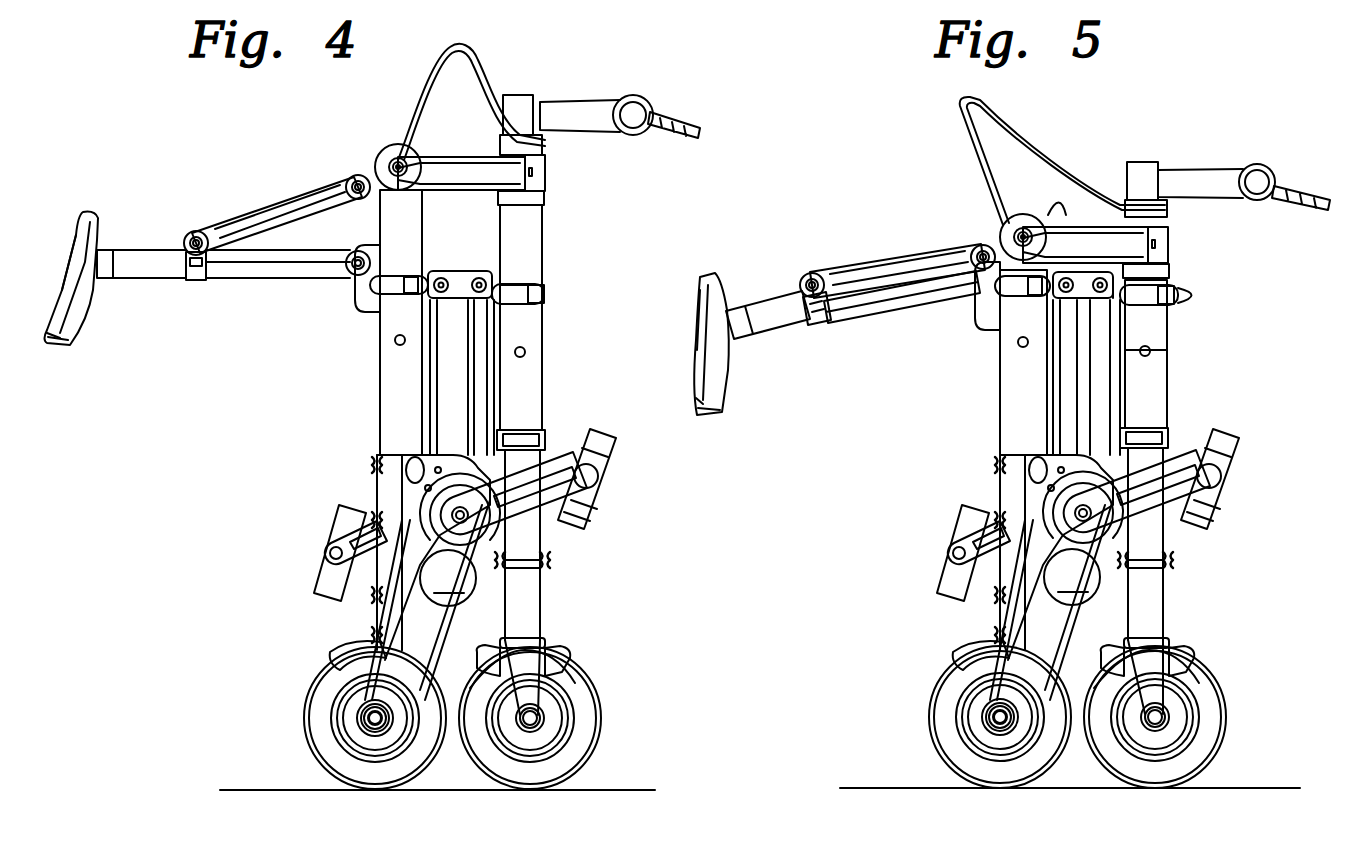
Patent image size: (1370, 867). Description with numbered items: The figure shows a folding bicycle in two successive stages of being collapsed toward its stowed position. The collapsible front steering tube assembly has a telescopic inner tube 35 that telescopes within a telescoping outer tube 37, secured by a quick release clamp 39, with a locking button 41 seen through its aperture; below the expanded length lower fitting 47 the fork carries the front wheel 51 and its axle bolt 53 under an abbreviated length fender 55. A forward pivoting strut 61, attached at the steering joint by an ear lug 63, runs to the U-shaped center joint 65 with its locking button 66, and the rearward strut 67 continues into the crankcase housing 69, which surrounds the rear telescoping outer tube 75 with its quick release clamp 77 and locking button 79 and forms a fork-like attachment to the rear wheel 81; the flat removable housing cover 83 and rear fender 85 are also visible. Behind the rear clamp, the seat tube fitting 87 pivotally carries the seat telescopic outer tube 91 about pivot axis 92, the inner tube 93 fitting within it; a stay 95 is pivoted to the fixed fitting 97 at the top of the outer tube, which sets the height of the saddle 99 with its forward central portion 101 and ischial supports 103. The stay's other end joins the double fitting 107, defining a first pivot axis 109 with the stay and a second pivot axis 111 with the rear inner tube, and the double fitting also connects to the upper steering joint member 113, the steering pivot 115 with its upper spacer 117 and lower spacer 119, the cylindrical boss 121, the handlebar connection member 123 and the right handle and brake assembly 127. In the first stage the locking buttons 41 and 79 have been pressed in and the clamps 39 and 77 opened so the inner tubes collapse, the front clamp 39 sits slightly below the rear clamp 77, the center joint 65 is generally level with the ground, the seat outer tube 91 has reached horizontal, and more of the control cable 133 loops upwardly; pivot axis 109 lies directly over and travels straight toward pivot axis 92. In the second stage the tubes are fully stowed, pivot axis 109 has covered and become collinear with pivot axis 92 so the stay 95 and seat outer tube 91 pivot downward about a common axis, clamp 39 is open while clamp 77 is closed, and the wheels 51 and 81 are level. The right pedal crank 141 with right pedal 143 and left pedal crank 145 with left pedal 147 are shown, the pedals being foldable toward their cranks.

In FIG. 4, the telescopic inner tube 35 is at (542, 245).
In FIG. 5, the telescopic inner tube 35 is at (1146, 256).
In FIG. 4, the telescoping outer tube 37 is at (542, 322).
In FIG. 5, the telescoping outer tube 37 is at (1167, 388).
In FIG. 4, the quick release clamp 39 is at (544, 301).
In FIG. 5, the quick release clamp 39 is at (1166, 310).
In FIG. 4, the locking button 41 is at (525, 352).
In FIG. 5, the locking button 41 is at (1151, 355).
In FIG. 4, the lower fitting 47 is at (540, 590).
In FIG. 5, the lower fitting 47 is at (1164, 584).
In FIG. 4, the front wheel 51 is at (600, 711).
In FIG. 5, the front wheel 51 is at (1224, 738).
In FIG. 4, the axle bolt 53 is at (542, 718).
In FIG. 5, the axle bolt 53 is at (1158, 717).
In FIG. 4, the fender 55 is at (561, 662).
In FIG. 5, the fender 55 is at (1185, 658).
In FIG. 4, the forward pivoting strut 61 is at (480, 382).
In FIG. 5, the forward pivoting strut 61 is at (1118, 403).
In FIG. 4, the ear lug 63 is at (538, 446).
In FIG. 5, the ear lug 63 is at (1165, 448).
In FIG. 4, the center joint 65 is at (436, 272).
In FIG. 5, the center joint 65 is at (1076, 270).
In FIG. 4, the locking button 66 is at (480, 290).
In FIG. 5, the locking button 66 is at (1088, 297).
In FIG. 4, the rearward strut 67 is at (435, 402).
In FIG. 5, the rearward strut 67 is at (1050, 404).
In FIG. 4, the crankcase housing 69 is at (376, 490).
In FIG. 5, the crankcase housing 69 is at (1000, 490).
In FIG. 4, the telescoping outer tube 75 is at (378, 437).
In FIG. 5, the telescoping outer tube 75 is at (1000, 438).
In FIG. 4, the quick release clamp 77 is at (420, 278).
In FIG. 5, the quick release clamp 77 is at (1010, 302).
In FIG. 4, the locking button 79 is at (395, 342).
In FIG. 5, the locking button 79 is at (1019, 348).
In FIG. 4, the rear wheel 81 is at (366, 780).
In FIG. 5, the rear wheel 81 is at (940, 756).
In FIG. 4, the housing cover 83 is at (427, 600).
In FIG. 5, the housing cover 83 is at (1051, 600).
In FIG. 4, the rear fender 85 is at (335, 656).
In FIG. 5, the rear fender 85 is at (960, 656).
In FIG. 4, the seat tube fitting 87 is at (352, 314).
In FIG. 5, the seat tube fitting 87 is at (985, 310).
In FIG. 4, the telescopic outer tube 91 is at (248, 280).
In FIG. 5, the telescopic outer tube 91 is at (860, 306).
In FIG. 4, the pivot axis 92 is at (347, 268).
In FIG. 4, the inner tube 93 is at (134, 250).
In FIG. 5, the inner tube 93 is at (765, 304).
In FIG. 4, the stay 95 is at (270, 203).
In FIG. 5, the stay 95 is at (880, 258).
In FIG. 4, the fitting 97 is at (196, 282).
In FIG. 5, the fitting 97 is at (822, 314).
In FIG. 4, the saddle 99 is at (102, 212).
In FIG. 5, the saddle 99 is at (712, 278).
In FIG. 4, the forward central portion 101 is at (68, 236).
In FIG. 5, the forward central portion 101 is at (690, 290).
In FIG. 4, the ischial supports 103 is at (42, 345).
In FIG. 5, the ischial supports 103 is at (690, 402).
In FIG. 4, the double fitting 107 is at (333, 162).
In FIG. 5, the double fitting 107 is at (1002, 210).
In FIG. 4, the first pivot axis 109 is at (354, 205).
In FIG. 5, the first pivot axis 109 is at (975, 238).
In FIG. 4, the second pivot axis 111 is at (410, 167).
In FIG. 5, the second pivot axis 111 is at (1023, 237).
In FIG. 5, the upper steering joint member 113 is at (1058, 194).
In FIG. 4, the steering pivot 115 is at (546, 175).
In FIG. 5, the steering pivot 115 is at (1176, 248).
In FIG. 4, the upper spacer 117 is at (544, 150).
In FIG. 5, the upper spacer 117 is at (1174, 226).
In FIG. 4, the lower spacer 119 is at (544, 202).
In FIG. 5, the lower spacer 119 is at (1174, 276).
In FIG. 5, the boss 121 is at (1330, 185).
In FIG. 4, the handlebar connection member 123 is at (590, 98).
In FIG. 5, the handlebar connection member 123 is at (1212, 170).
In FIG. 4, the right handle and brake assembly 127 is at (656, 102).
In FIG. 4, the control cable 133 is at (505, 105).
In FIG. 5, the control cable 133 is at (960, 137).
In FIG. 4, the right pedal crank 141 is at (563, 516).
In FIG. 5, the right pedal crank 141 is at (1185, 518).
In FIG. 4, the right pedal 143 is at (614, 454).
In FIG. 5, the right pedal 143 is at (1244, 456).
In FIG. 4, the left pedal crank 145 is at (340, 596).
In FIG. 5, the left pedal crank 145 is at (963, 596).
In FIG. 4, the left pedal 147 is at (340, 515).
In FIG. 5, the left pedal 147 is at (962, 515).